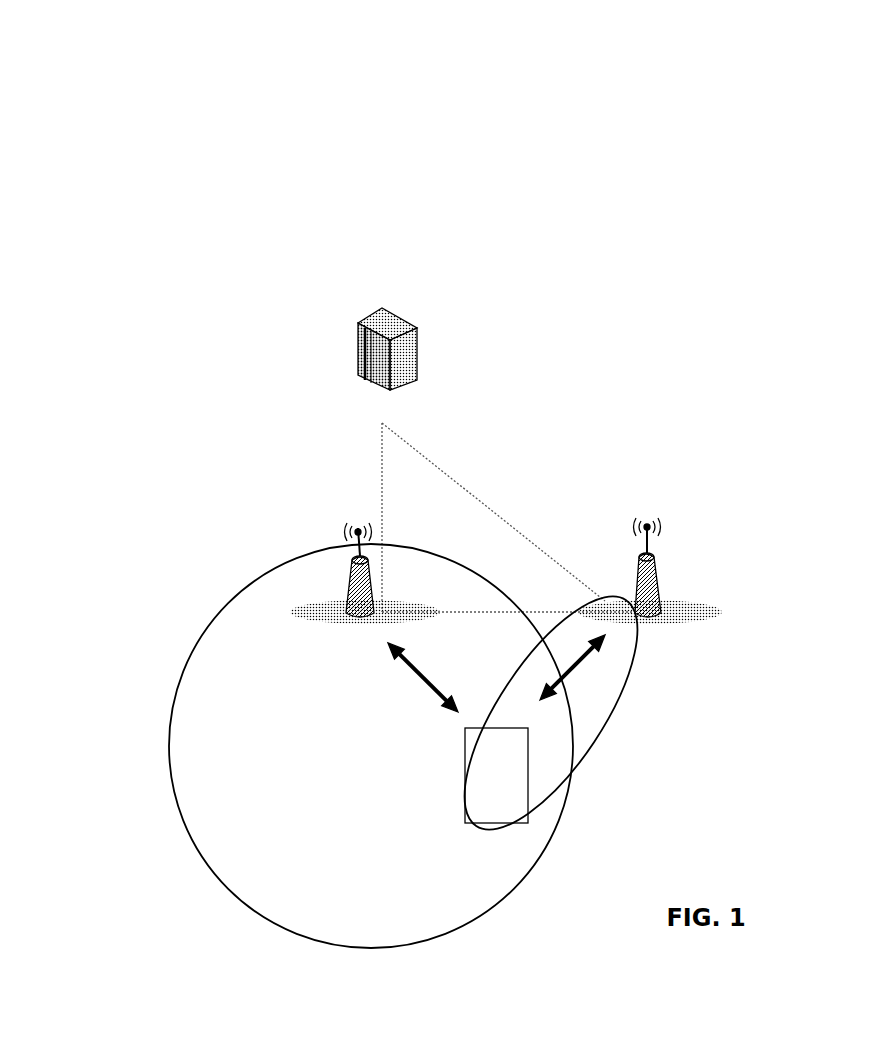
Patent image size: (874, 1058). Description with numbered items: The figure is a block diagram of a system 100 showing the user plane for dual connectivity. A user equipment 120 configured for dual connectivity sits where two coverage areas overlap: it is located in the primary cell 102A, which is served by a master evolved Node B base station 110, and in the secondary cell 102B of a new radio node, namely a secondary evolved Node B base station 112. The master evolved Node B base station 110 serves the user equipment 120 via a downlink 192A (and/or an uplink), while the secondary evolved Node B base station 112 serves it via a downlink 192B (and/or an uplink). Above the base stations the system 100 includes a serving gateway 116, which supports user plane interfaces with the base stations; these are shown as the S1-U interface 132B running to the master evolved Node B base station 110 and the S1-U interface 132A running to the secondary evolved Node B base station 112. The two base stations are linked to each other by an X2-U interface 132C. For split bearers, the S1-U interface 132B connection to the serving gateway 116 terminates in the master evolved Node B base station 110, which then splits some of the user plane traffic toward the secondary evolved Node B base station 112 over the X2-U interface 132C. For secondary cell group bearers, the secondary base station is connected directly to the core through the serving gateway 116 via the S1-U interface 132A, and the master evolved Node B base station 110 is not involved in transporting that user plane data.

The system 100 is at (568, 49).
The primary cell (Pcell) 102A is at (170, 703).
The secondary cell (Scell) 102B is at (590, 742).
The master evolved Node B base station (MeNB) 110 is at (355, 587).
The secondary evolved Node B base station (SeNB) 112 is at (660, 588).
The serving gateway (SGW) 116 is at (377, 352).
The user equipment (UE) 120 is at (481, 798).
The S1-U interface 132A is at (449, 480).
The S1-U interface 132B is at (389, 480).
The X2-U interface 132C is at (465, 616).
The downlink 192A is at (405, 675).
The downlink 192B is at (567, 677).